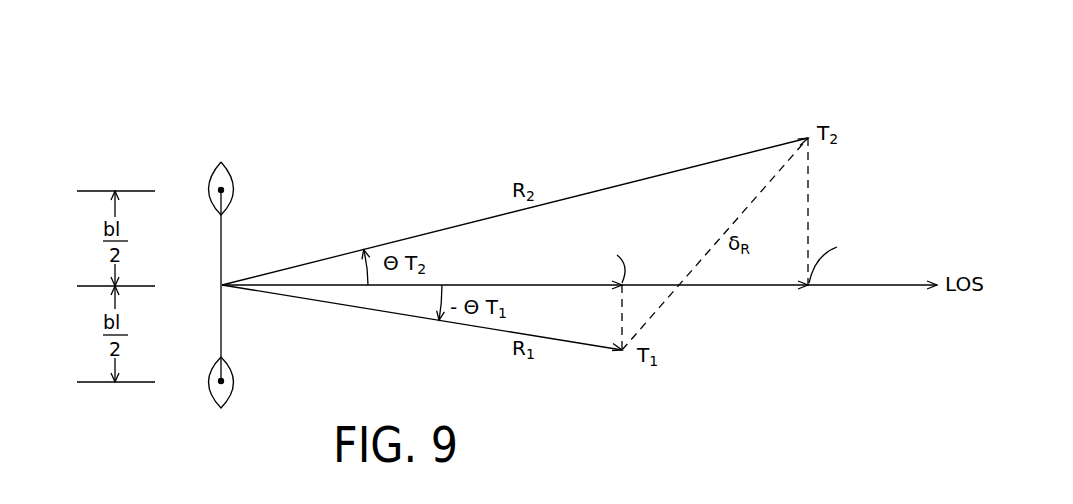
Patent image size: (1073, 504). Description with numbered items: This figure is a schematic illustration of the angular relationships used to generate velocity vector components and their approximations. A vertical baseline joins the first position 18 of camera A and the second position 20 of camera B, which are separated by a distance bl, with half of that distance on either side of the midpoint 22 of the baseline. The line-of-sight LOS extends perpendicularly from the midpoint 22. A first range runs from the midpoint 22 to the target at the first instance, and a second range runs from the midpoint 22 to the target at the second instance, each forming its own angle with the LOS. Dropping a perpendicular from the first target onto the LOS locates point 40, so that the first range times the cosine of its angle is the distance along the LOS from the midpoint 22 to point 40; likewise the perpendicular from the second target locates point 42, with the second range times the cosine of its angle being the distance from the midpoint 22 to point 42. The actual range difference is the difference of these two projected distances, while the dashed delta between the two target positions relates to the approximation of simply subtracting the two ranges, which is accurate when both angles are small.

The first position 18 is at (216, 196).
The second position 20 is at (217, 378).
The midpoint of the baseline 22 is at (224, 291).
The point 40 is at (620, 290).
The point 42 is at (810, 288).